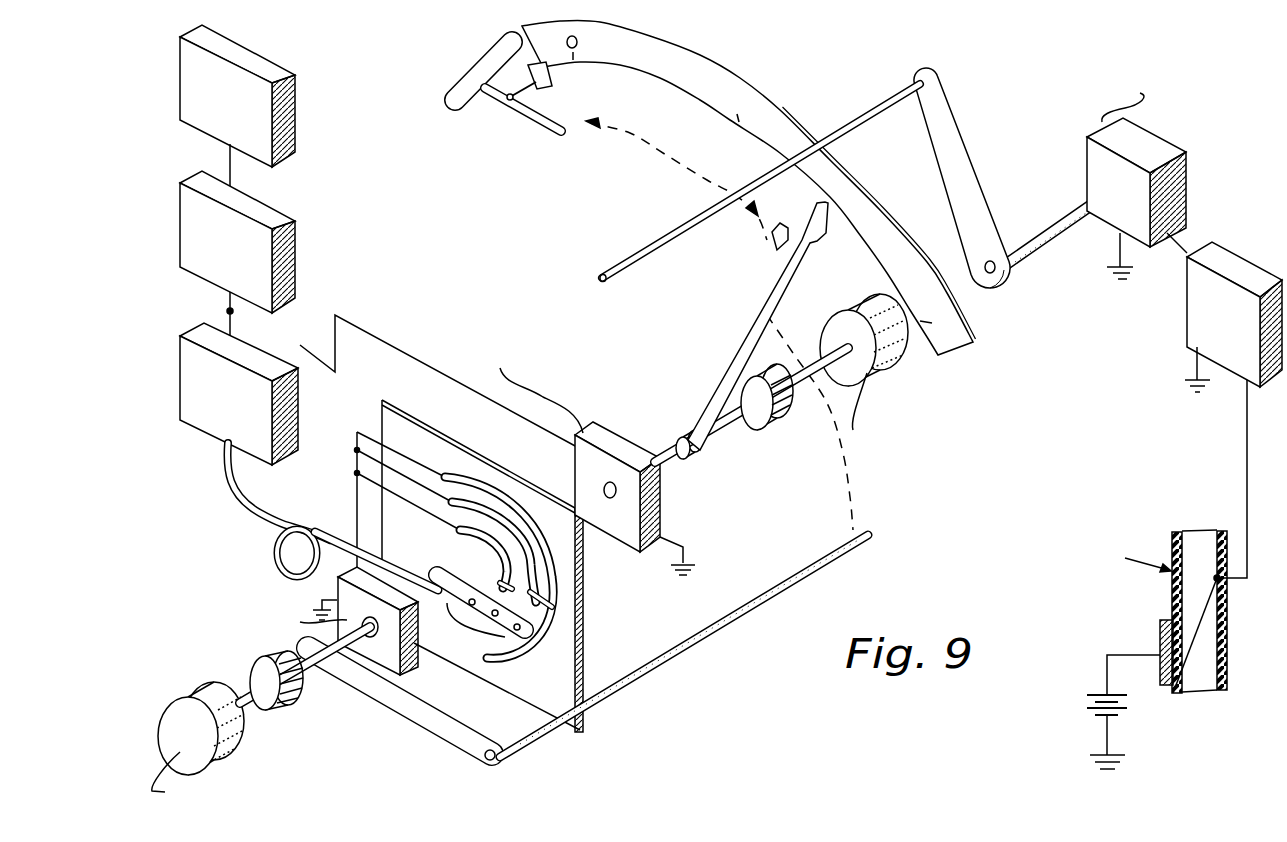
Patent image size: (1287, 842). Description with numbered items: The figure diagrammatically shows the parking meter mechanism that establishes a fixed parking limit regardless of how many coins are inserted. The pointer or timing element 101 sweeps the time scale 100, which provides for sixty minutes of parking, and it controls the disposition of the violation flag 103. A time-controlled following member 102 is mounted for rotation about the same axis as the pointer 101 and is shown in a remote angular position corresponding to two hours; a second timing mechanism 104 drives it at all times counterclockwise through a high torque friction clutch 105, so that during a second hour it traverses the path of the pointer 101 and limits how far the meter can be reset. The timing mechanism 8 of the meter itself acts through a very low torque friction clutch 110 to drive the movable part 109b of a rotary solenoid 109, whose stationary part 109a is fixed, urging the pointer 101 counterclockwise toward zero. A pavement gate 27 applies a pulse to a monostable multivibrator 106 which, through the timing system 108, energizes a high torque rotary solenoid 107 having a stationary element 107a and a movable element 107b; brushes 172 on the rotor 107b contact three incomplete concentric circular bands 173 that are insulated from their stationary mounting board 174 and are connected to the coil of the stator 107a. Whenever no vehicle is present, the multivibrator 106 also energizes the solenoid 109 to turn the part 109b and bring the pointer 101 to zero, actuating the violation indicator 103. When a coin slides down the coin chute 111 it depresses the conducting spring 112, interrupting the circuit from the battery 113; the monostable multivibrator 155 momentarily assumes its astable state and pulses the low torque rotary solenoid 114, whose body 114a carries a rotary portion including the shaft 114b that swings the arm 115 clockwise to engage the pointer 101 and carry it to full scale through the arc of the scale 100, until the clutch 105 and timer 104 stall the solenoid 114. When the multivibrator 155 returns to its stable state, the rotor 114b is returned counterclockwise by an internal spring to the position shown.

The pavement gate 27 is at (292, 131).
The monostable multivibrator 106 is at (290, 265).
The timing system 108 is at (284, 412).
The high torque rotary solenoid 107 is at (297, 602).
The stationary element 107a is at (413, 682).
The movable element 107b is at (430, 587).
The high torque friction clutch 105 is at (300, 703).
The second timing mechanism 104 is at (250, 742).
The incomplete concentric circular bands 173 is at (450, 474).
The brushes 172 is at (497, 583).
The stationary mounting board 174 is at (584, 632).
The time-controlled following member 102 is at (808, 582).
The rotary solenoid 109 is at (611, 467).
The stationary part 109a is at (598, 432).
The movable part 109b is at (663, 438).
The very low torque friction clutch 110 is at (777, 413).
The timing mechanism 8 is at (892, 367).
The pointer 101 is at (767, 284).
The time scale 100 is at (737, 72).
The violation flag 103 is at (503, 104).
The arm 115 is at (643, 243).
The low torque rotary solenoid 114 is at (1067, 178).
The solenoid body 114a is at (1137, 130).
The shaft 114b is at (1040, 255).
The monostable multivibrator 155 is at (1185, 323).
The coin chute 111 is at (1170, 553).
The conducting spring 112 is at (1202, 600).
The source 113 is at (1085, 706).